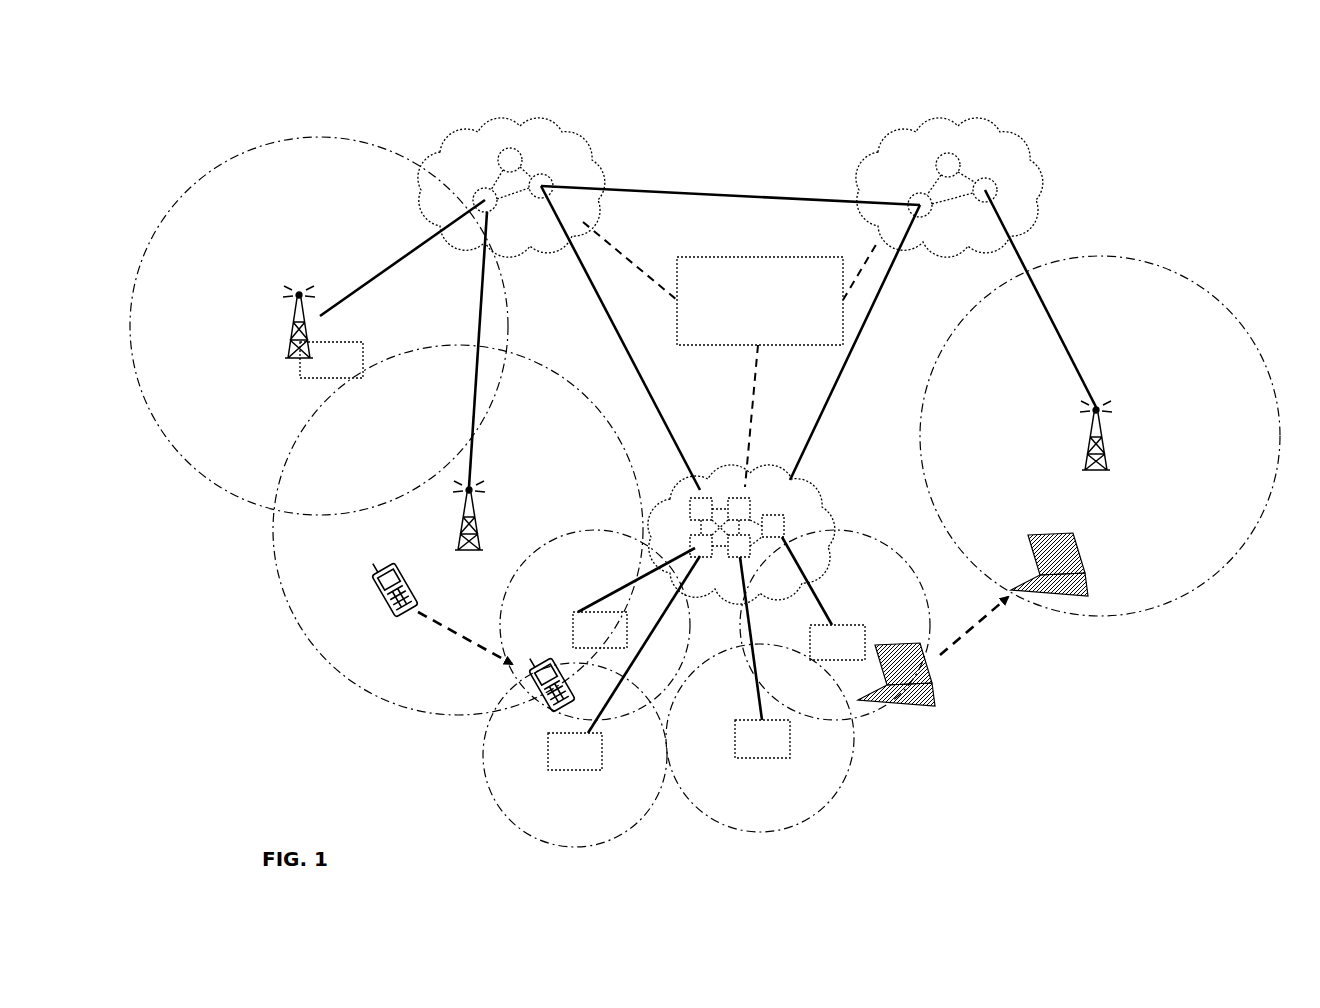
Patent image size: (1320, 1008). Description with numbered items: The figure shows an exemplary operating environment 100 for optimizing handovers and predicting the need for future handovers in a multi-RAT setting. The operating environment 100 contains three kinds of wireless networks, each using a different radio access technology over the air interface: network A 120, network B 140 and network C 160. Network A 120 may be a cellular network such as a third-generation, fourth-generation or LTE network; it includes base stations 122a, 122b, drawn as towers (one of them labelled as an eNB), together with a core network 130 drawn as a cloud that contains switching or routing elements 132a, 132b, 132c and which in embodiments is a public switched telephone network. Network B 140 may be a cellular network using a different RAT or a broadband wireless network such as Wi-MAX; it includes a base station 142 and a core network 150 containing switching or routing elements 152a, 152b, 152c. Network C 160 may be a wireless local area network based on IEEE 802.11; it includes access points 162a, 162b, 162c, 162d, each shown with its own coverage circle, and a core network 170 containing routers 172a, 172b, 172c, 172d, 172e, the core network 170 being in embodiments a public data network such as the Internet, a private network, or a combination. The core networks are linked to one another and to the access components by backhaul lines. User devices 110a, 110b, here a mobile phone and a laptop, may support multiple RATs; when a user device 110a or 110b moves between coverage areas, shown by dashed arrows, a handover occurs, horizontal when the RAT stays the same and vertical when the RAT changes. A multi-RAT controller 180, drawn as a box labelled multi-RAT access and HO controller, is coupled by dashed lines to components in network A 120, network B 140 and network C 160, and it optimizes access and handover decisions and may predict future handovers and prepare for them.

The operating environment 100 is at (1222, 57).
The network A 120 is at (498, 91).
The core network 130 is at (590, 148).
The switching or routing element 132a is at (536, 203).
The switching or routing element 132b is at (488, 157).
The switching or routing element 132c is at (595, 218).
The network B 140 is at (1148, 107).
The core network 150 is at (1043, 166).
The switching or routing element 152a is at (972, 206).
The switching or routing element 152b is at (933, 160).
The switching or routing element 152c is at (1030, 226).
The network C 160 is at (998, 797).
The core network 170 is at (763, 534).
The router 172a is at (715, 556).
The router 172b is at (676, 508).
The router 172c is at (761, 550).
The router 172d is at (759, 504).
The router 172e is at (790, 523).
The multi-RAT controller 180 is at (765, 347).
The base station 122a is at (298, 324).
The base station 122b is at (490, 515).
The base station 142 is at (1108, 440).
The access point 162a is at (589, 764).
The access point 162b is at (583, 617).
The access point 162c is at (771, 751).
The access point 162d is at (853, 629).
The user device 110a is at (470, 633).
The user device 110b is at (973, 631).